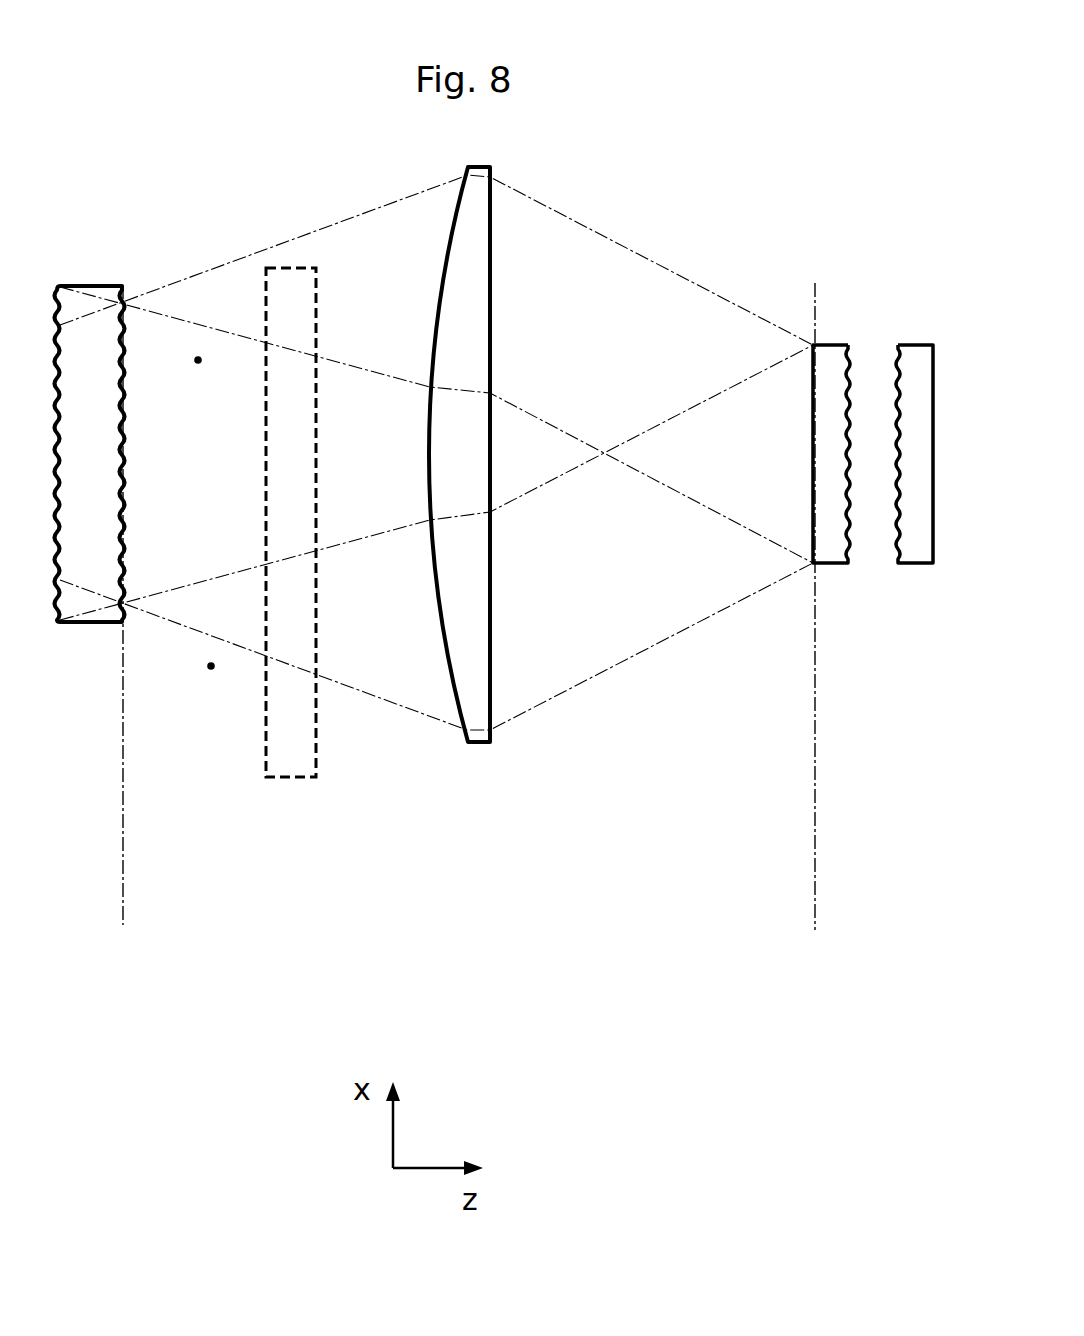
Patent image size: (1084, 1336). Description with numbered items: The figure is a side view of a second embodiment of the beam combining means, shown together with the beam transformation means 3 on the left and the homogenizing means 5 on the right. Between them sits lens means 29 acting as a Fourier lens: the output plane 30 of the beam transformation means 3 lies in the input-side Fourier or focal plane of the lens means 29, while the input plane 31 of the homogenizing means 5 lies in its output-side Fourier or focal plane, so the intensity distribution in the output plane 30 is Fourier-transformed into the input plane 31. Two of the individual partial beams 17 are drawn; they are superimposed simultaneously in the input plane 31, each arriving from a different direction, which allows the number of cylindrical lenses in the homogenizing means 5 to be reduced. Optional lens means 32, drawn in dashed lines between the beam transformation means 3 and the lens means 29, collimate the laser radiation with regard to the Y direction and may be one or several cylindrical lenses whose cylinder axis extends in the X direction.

The beam transformation means 3 is at (83, 328).
The homogenizing means 5 is at (911, 392).
The partial beams 17 is at (198, 358).
The lens means 29 is at (492, 228).
The output plane 30 is at (123, 925).
The input plane 31 is at (815, 932).
The lens means 32 is at (293, 778).